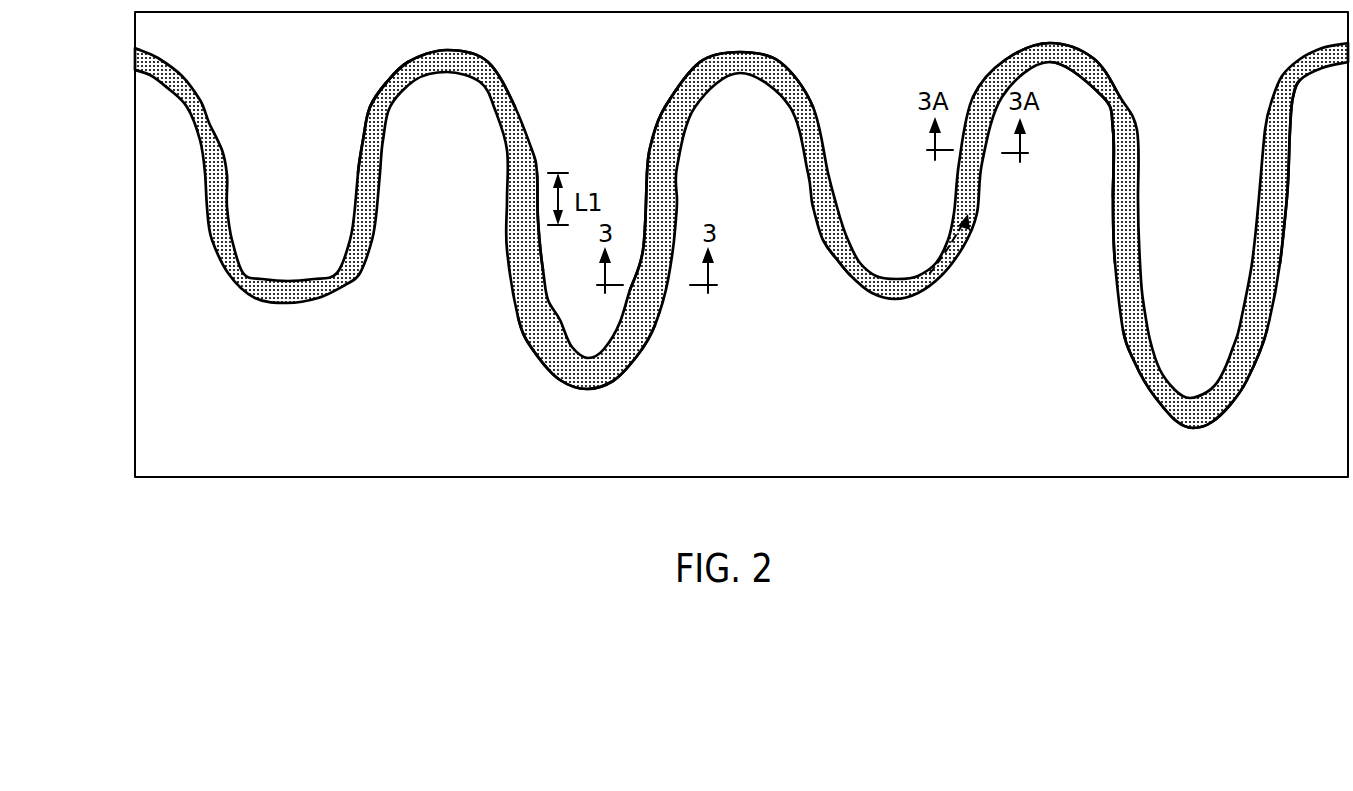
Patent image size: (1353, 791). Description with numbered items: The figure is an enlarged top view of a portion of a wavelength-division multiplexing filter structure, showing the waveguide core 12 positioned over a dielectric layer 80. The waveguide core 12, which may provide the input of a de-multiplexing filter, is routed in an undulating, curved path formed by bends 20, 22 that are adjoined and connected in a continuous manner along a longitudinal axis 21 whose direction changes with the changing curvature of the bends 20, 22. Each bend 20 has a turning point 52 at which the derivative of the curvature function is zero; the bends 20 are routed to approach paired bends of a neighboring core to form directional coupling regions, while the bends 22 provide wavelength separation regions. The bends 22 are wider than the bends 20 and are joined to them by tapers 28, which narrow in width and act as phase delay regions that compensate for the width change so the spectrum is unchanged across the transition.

The waveguide core 12 is at (220, 295).
The bends 20 is at (387, 98).
The longitudinal axis 21 is at (960, 242).
The bends 22 is at (528, 328).
The tapers 28 is at (526, 205).
The turning point 52 is at (447, 52).
The dielectric layer 80 is at (266, 429).